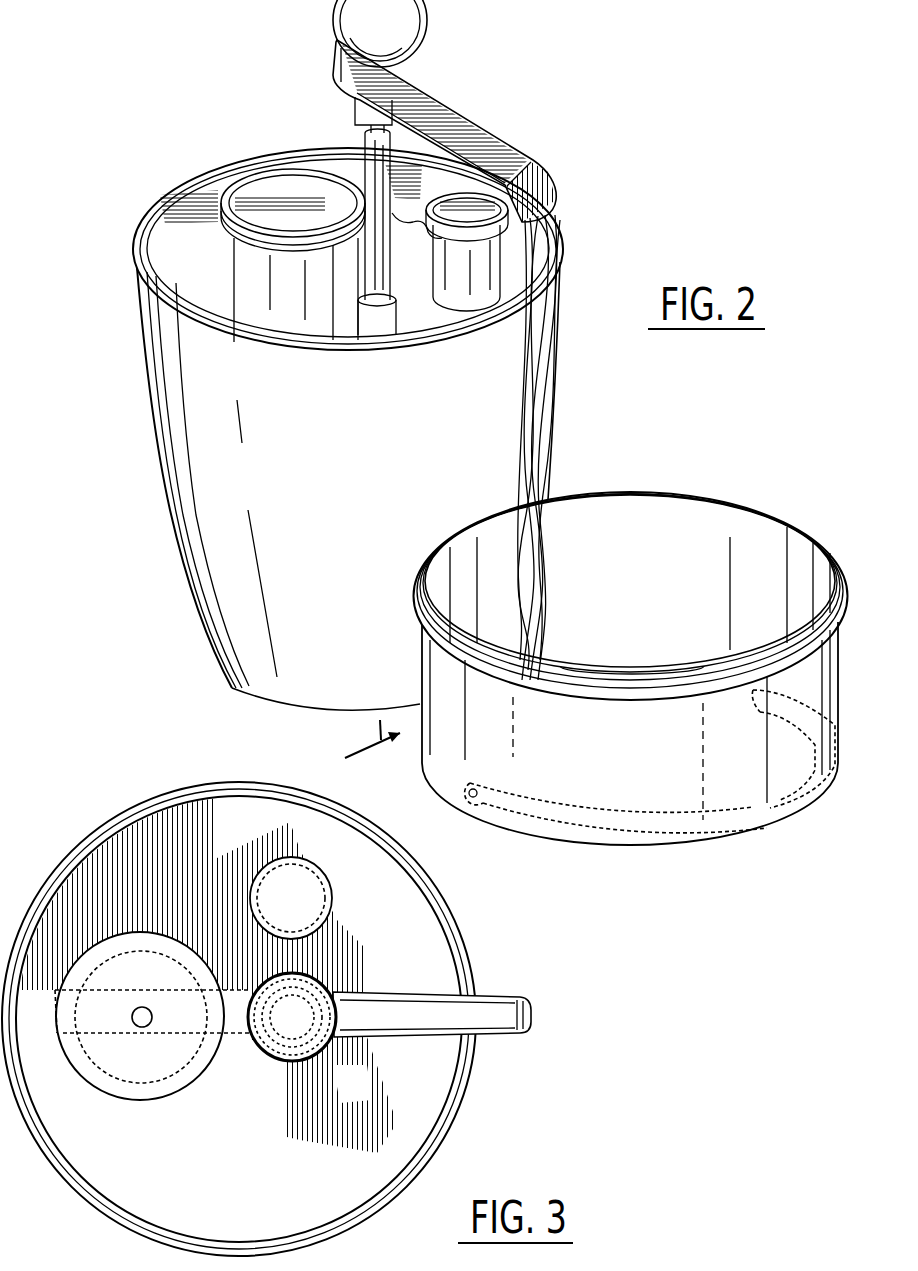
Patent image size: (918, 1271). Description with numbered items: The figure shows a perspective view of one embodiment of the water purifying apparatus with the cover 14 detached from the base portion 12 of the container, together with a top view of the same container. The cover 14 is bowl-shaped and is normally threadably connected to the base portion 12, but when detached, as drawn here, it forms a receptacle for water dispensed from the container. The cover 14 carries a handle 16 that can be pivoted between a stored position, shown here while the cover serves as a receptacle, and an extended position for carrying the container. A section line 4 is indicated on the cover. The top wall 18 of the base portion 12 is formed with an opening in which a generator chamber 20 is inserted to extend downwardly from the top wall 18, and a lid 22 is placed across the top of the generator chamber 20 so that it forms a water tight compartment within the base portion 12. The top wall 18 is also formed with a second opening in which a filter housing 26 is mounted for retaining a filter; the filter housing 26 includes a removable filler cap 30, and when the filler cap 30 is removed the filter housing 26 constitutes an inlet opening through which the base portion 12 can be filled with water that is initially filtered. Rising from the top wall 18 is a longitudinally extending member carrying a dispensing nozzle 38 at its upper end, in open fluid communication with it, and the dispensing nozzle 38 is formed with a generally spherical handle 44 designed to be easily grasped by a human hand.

In FIG. 2, the section line 4- 4 is at (366, 742).
In FIG. 2, the base portion 12 is at (200, 508).
In FIG. 2, the cover 14 is at (813, 683).
In FIG. 2, the handle 16 is at (781, 815).
In FIG. 2, the top wall 18 is at (202, 207).
In FIG. 3, the top wall 18 is at (433, 945).
In FIG. 2, the generator chamber 20 is at (263, 283).
In FIG. 2, the lid 22 is at (217, 217).
In FIG. 3, the lid 22 is at (95, 1073).
In FIG. 2, the filter housing 26 is at (463, 270).
In FIG. 2, the filler cap 30 is at (490, 213).
In FIG. 3, the filler cap 30 is at (295, 898).
In FIG. 2, the dispensing nozzle 38 is at (480, 130).
In FIG. 3, the dispensing nozzle 38 is at (513, 1013).
In FIG. 2, the spherical handle 44 is at (387, 23).
In FIG. 3, the spherical handle 44 is at (292, 1053).